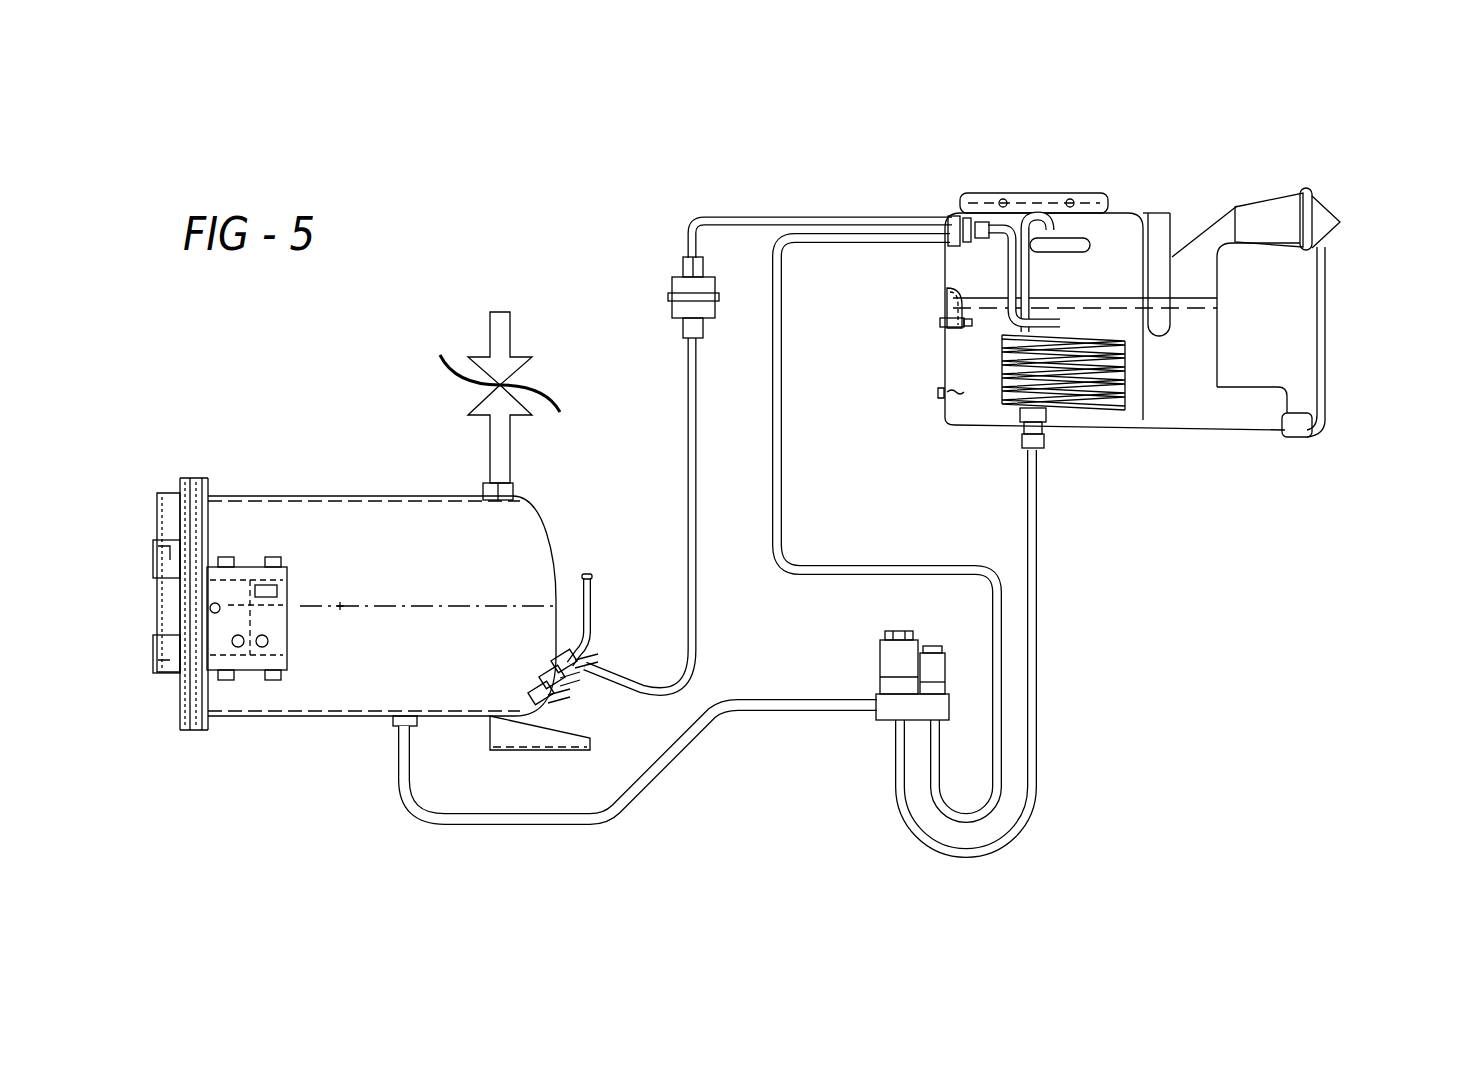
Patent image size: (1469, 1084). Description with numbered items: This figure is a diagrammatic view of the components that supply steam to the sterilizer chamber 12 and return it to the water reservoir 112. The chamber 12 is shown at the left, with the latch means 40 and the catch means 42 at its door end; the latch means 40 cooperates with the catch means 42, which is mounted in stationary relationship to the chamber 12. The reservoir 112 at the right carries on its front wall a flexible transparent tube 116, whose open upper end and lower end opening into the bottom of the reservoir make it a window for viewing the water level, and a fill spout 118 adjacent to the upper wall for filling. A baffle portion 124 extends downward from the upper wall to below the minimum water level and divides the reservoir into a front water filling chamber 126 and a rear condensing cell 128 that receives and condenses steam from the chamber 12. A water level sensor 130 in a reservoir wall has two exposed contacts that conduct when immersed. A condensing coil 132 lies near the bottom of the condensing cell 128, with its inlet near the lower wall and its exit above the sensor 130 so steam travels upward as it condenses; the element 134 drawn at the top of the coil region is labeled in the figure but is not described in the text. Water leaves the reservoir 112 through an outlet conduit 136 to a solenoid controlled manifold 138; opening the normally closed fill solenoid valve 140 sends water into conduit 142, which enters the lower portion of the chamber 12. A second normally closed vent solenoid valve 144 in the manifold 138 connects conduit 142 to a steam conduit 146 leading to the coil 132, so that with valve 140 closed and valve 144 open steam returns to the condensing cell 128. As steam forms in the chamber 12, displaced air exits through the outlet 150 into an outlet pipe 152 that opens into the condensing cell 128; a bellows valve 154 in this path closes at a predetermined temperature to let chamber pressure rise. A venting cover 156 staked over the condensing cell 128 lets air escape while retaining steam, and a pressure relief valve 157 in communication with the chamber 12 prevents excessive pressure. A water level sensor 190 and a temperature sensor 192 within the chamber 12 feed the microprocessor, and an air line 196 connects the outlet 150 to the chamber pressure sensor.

The sterilizer chamber 12 is at (325, 493).
The latch means 40 is at (155, 522).
The catch means 42 is at (250, 685).
The water reservoir 112 is at (1200, 432).
The flexible transparent tube 116 is at (1327, 287).
The fill spout 118 is at (1325, 222).
The baffle portion 124 is at (1235, 207).
The water filling chamber 126 is at (1210, 283).
The condensing cell 128 is at (1150, 232).
The water level sensor 130 is at (957, 340).
The condensing coil 132 is at (1100, 408).
The coil housing 134 is at (1050, 222).
The outlet conduit 136 is at (1040, 840).
The solenoid controlled manifold 138 is at (880, 722).
The fill solenoid valve 140 is at (885, 662).
The conduit 142 is at (532, 826).
The vent solenoid valve 144 is at (936, 660).
The steam conduit 146 is at (900, 565).
The outlet 150 is at (555, 650).
The outlet pipe 152 is at (688, 445).
The bellows valve 154 is at (672, 270).
The venting cover 156 is at (1030, 192).
The pressure relief valve 157 is at (490, 388).
The water level sensor 190 is at (540, 690).
The temperature sensor 192 is at (548, 665).
The air line 196 is at (595, 612).